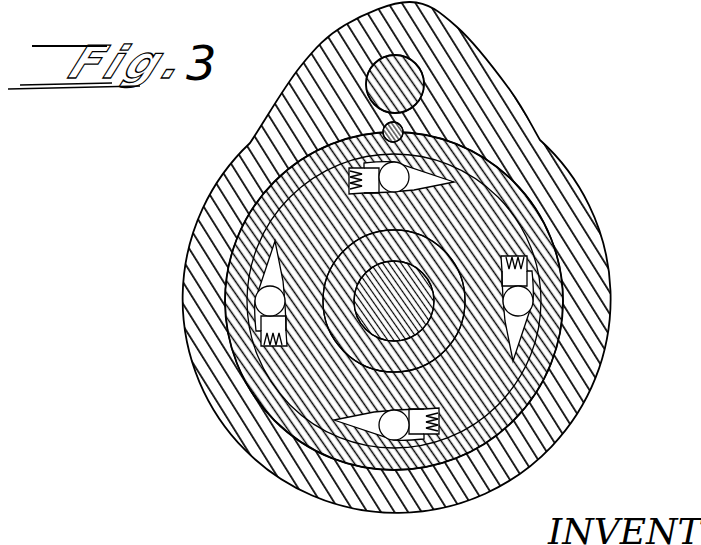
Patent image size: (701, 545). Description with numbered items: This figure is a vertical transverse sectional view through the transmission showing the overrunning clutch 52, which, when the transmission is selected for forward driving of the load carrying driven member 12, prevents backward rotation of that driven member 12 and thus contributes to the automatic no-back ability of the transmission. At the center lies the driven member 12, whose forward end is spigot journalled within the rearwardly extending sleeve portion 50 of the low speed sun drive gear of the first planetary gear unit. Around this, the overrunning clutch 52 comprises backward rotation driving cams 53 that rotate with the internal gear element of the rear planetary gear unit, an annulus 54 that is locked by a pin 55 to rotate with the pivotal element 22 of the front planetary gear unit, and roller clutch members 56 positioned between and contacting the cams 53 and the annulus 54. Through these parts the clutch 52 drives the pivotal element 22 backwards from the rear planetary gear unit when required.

The driven member 12 is at (418, 314).
The pivotal element 22 is at (455, 50).
The rearwardly extending sleeve portion 50 is at (387, 250).
The overrunning clutch 52 is at (483, 213).
The backward rotation driving cams 53 is at (500, 322).
The annulus 54 is at (262, 259).
The pin 55 is at (405, 125).
The roller clutch members 56 is at (412, 164).